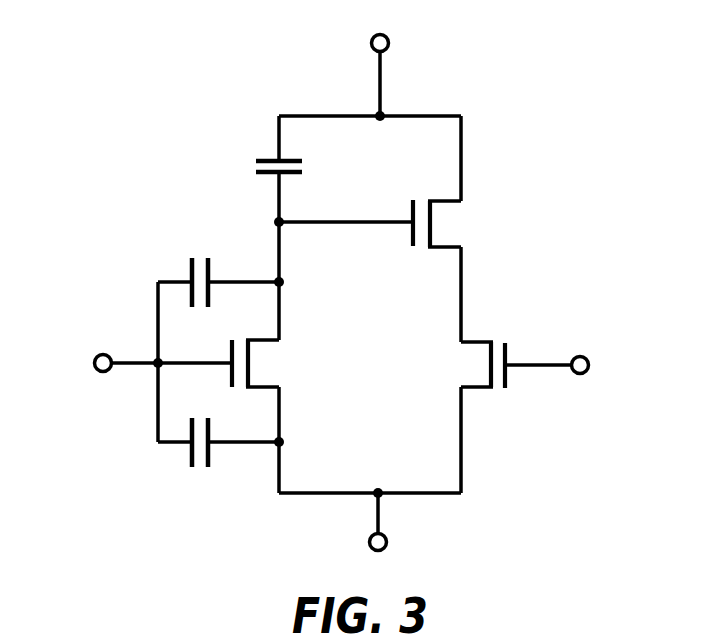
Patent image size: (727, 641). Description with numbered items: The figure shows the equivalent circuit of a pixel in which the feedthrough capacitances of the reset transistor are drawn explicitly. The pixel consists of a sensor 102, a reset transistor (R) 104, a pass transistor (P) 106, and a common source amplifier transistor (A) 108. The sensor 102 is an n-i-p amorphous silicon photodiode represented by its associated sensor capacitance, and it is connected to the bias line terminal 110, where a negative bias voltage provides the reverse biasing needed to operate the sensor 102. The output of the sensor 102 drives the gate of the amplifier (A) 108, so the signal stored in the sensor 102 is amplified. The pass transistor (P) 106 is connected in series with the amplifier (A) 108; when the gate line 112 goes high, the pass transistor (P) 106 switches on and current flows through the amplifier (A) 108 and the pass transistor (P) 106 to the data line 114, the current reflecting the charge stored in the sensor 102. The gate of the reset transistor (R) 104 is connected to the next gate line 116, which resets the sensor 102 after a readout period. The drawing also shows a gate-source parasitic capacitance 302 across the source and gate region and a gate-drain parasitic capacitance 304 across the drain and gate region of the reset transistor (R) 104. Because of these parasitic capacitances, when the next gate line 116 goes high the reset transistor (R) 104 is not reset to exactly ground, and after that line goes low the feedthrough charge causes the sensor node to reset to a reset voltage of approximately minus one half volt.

The sensor 102 is at (265, 158).
The reset transistor 104 is at (280, 364).
The pass transistor 106 is at (462, 363).
The common source amplifier transistor 108 is at (461, 222).
The bias voltage terminal VB 110 is at (371, 48).
The gate line 112 is at (575, 352).
The data line 114 is at (388, 544).
The next gate line 116 is at (106, 373).
The parasitic capacitance Cgs 302 is at (188, 454).
The parasitic capacitance Cgd 304 is at (188, 270).